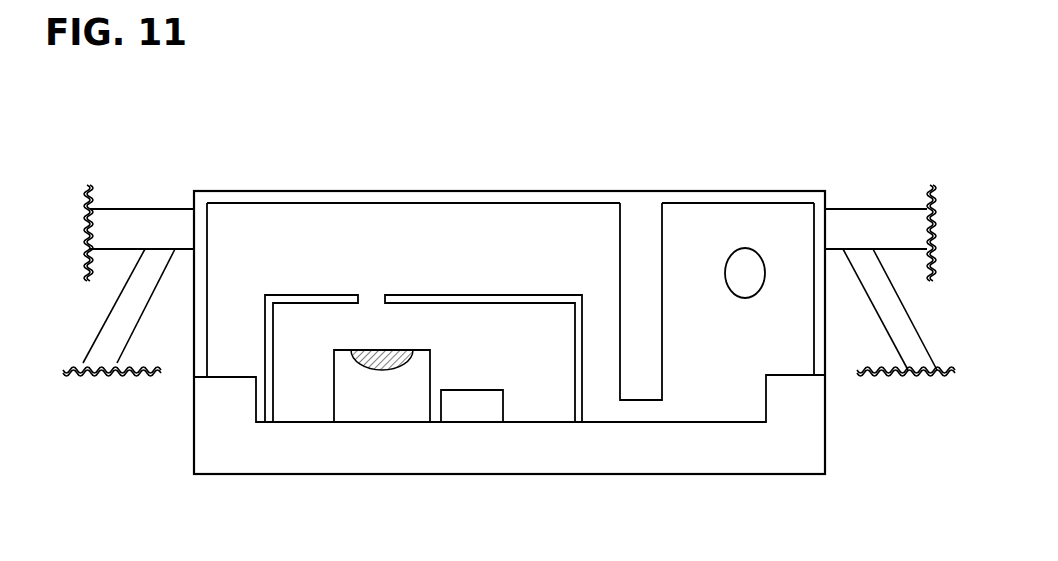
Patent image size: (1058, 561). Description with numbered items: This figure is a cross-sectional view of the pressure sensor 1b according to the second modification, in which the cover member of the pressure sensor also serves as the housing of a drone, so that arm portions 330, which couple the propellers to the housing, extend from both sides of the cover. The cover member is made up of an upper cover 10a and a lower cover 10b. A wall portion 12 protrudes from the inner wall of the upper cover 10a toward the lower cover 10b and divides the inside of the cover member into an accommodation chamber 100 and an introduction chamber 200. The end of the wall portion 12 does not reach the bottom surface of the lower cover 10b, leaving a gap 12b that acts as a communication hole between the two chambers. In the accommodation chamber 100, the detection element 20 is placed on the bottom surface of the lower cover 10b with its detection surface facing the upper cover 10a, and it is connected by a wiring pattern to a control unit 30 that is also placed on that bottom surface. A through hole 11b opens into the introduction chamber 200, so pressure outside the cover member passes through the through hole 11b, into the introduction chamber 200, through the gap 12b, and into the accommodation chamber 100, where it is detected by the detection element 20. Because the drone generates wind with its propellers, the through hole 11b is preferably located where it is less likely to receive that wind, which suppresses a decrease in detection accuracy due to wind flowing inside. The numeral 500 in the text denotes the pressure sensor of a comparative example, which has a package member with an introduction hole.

The pressure sensor 1b is at (474, 173).
The upper cover 10a is at (712, 190).
The lower cover 10b is at (610, 475).
The through hole 11b is at (740, 298).
The wall portion 12 is at (618, 280).
The gap 12b is at (640, 410).
The detection element 20 is at (334, 372).
The control unit 30 is at (498, 390).
The accommodation chamber 100 is at (382, 250).
The introduction chamber 200 is at (768, 239).
The arm portions 330 is at (163, 209).
The pressure sensor 500 is at (432, 295).